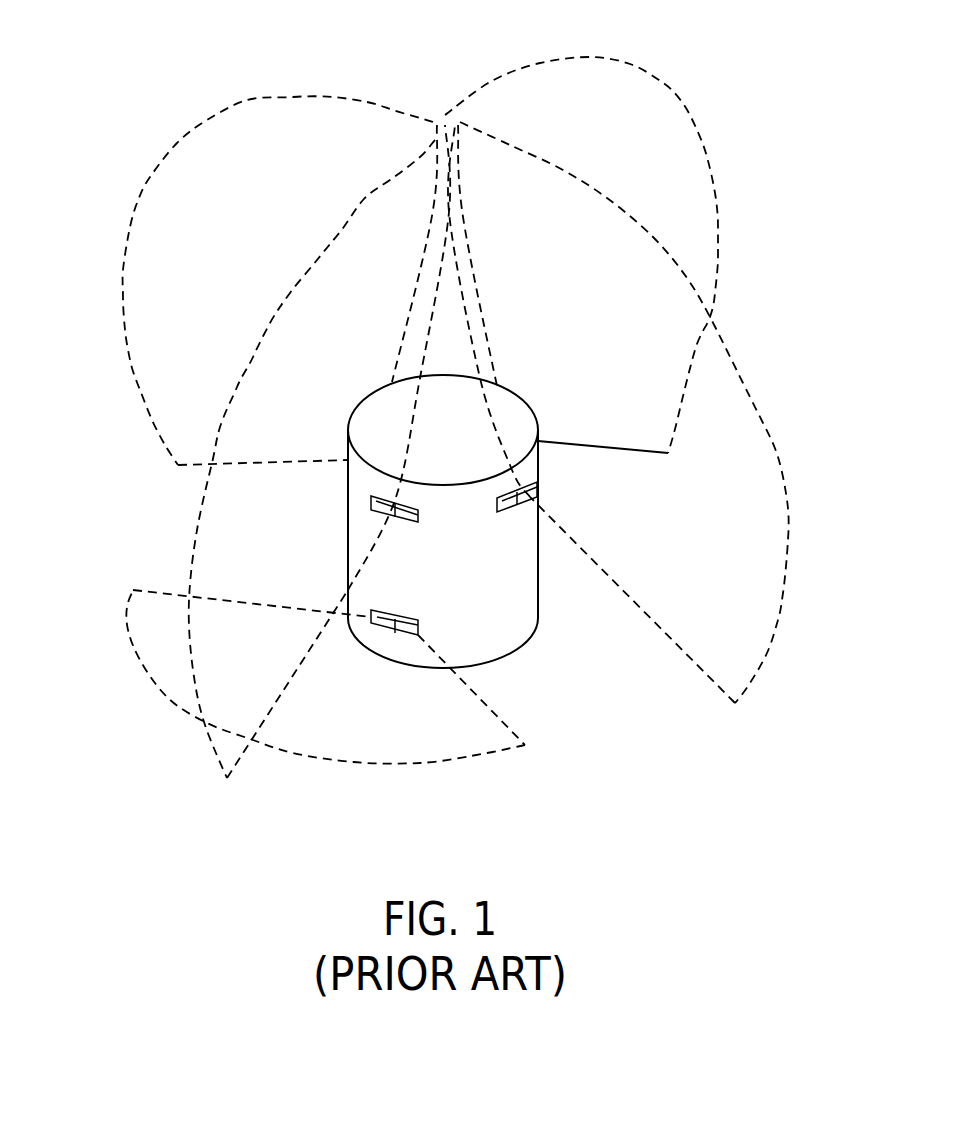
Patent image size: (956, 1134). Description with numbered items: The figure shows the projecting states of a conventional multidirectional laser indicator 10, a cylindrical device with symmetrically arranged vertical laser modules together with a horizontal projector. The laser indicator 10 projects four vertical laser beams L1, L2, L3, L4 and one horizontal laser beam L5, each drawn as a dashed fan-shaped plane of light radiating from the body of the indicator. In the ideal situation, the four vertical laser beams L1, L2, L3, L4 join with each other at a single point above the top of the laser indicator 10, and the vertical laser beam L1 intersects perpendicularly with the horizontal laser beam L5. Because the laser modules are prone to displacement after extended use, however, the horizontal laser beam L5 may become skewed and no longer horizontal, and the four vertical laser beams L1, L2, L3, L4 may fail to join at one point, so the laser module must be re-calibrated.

The laser indicator 10 is at (530, 638).
The vertical laser beam L1 is at (360, 208).
The vertical laser beam L2 is at (565, 171).
The vertical laser beam L3 is at (491, 82).
The vertical laser beam L4 is at (373, 103).
The horizontal laser beam L5 is at (293, 753).